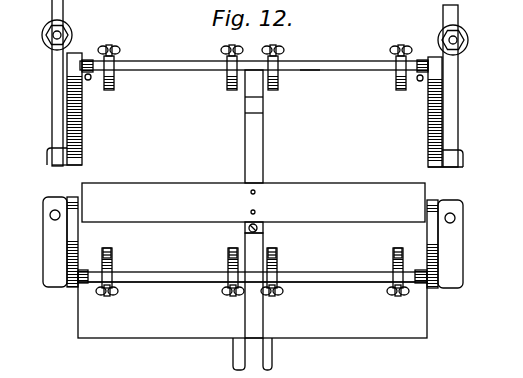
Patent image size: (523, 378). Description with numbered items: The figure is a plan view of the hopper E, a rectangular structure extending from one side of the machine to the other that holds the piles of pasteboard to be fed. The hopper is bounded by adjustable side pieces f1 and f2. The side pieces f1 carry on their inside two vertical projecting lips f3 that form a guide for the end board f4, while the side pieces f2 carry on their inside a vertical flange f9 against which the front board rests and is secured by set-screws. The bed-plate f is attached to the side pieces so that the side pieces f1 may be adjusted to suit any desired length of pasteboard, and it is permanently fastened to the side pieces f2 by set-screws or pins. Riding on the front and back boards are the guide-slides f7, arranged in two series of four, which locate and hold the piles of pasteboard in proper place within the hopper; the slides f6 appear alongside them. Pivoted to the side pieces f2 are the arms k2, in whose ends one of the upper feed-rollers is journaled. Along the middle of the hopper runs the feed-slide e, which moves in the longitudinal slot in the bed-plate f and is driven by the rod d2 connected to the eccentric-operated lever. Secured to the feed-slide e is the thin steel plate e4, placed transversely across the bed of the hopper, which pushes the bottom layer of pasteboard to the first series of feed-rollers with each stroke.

The arms k2 is at (53, 113).
The side pieces f2 is at (82, 127).
The side pieces f1 is at (285, 58).
The vertical projecting lips f3 is at (310, 80).
The guide-slides f7 is at (117, 53).
The vertical flange f9 is at (97, 75).
The rod d2 is at (252, 220).
The thin steel plate e4 is at (253, 202).
The feed-slide e is at (254, 235).
The hopper E is at (226, 143).
The end board f4 is at (252, 272).
The bed-plate f is at (427, 325).
The lower clamp screw f6 is at (99, 262).